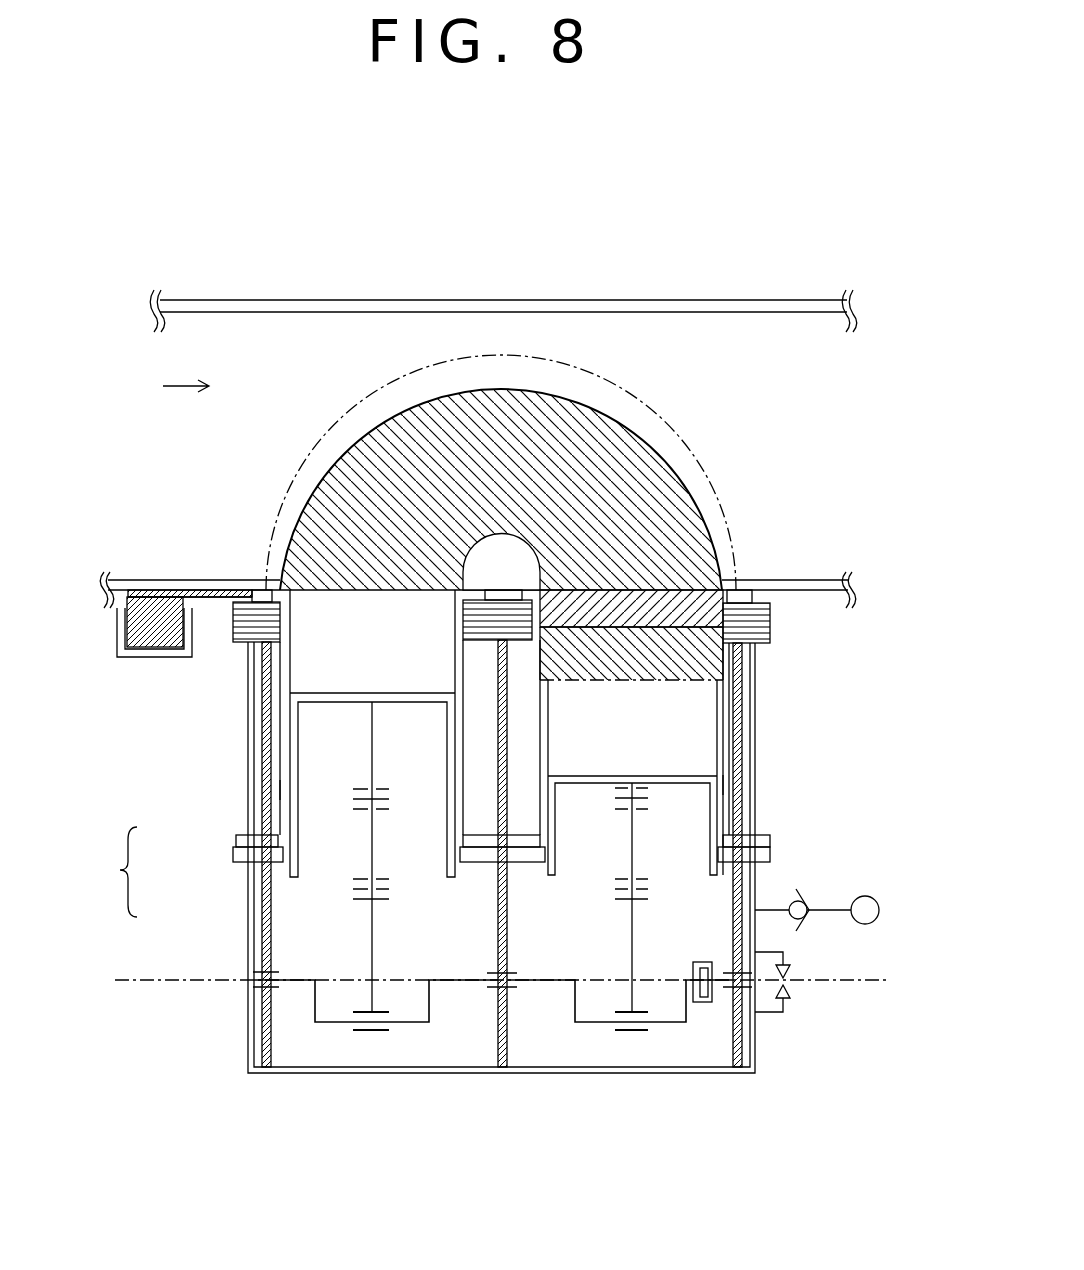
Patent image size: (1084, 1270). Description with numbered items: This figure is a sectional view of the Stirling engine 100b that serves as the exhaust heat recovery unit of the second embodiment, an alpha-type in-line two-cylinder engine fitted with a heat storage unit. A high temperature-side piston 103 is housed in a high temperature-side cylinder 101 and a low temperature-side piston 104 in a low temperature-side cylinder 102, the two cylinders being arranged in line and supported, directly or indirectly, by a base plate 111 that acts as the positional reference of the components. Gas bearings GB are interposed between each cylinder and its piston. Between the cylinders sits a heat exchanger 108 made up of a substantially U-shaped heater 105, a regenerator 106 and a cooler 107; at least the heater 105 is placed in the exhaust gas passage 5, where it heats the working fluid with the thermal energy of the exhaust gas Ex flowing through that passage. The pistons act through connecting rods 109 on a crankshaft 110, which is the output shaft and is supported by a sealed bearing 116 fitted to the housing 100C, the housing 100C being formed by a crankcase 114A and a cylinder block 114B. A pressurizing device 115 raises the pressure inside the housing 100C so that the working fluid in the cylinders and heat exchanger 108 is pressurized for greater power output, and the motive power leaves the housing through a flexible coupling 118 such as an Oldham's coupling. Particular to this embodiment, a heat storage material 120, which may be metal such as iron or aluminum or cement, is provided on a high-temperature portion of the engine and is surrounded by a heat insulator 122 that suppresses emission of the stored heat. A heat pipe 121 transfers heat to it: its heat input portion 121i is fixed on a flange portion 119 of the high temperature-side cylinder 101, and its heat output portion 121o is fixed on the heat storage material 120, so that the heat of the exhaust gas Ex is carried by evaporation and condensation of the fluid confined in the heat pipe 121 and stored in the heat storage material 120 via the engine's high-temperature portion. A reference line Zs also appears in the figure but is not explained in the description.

The exhaust gas passage 5 is at (331, 306).
The heater 105 is at (600, 400).
The heat exchanger 108 is at (674, 426).
The heat pipe 121 is at (190, 592).
The heat output portion 121o is at (133, 596).
The heat input portion 121i is at (236, 592).
The flange portion 119 is at (262, 596).
The heat storage material 120 is at (150, 632).
The heat insulator 122 is at (117, 632).
The base plate 111 is at (248, 641).
The high temperature-side cylinder 101 is at (290, 713).
The high temperature-side piston 103 is at (292, 753).
The gas bearing GB is at (288, 790).
The crankcase 114A is at (250, 920).
The cylinder block 114B is at (250, 815).
The housing 100C is at (89, 872).
The regenerator 106 is at (700, 612).
The cooler 107 is at (700, 662).
The low temperature-side cylinder 102 is at (722, 724).
The low temperature-side piston 104 is at (705, 818).
The connecting rod 109 is at (373, 935).
The crankshaft 110 is at (540, 985).
The flexible coupling 118 is at (704, 1003).
The pressurizing device 115 is at (868, 896).
The sealed bearing 116 is at (790, 990).
The Stirling engine 100b is at (786, 1073).
The axis Zs is at (522, 980).
The exhaust gas Ex is at (163, 385).